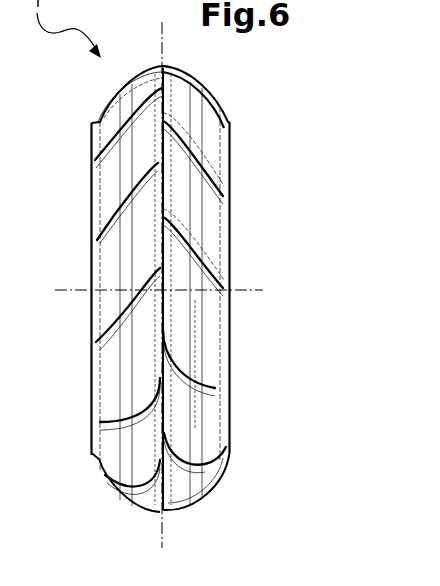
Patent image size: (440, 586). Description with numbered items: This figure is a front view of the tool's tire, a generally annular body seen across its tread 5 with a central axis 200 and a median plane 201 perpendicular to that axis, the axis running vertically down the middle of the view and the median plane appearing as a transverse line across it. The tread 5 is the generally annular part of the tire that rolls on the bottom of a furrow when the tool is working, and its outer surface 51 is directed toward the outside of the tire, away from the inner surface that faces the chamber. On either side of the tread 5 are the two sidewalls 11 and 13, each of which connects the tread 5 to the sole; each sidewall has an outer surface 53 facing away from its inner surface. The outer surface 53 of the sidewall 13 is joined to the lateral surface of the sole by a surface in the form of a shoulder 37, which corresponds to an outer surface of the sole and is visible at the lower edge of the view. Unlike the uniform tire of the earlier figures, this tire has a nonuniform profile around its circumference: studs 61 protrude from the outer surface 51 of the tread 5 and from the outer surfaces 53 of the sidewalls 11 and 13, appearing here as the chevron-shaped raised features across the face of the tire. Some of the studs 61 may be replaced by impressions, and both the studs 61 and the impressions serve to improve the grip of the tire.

The studs 61 is at (100, 162).
The sidewall 13 is at (206, 213).
The central axis 200 is at (265, 290).
The median plane 201 is at (162, 538).
The sidewall 11 is at (107, 302).
The tread 5 is at (205, 347).
The shoulder 37 is at (94, 452).
The outer surface of the sidewall 53 is at (203, 470).
The outer surface of the tread 51 is at (159, 512).